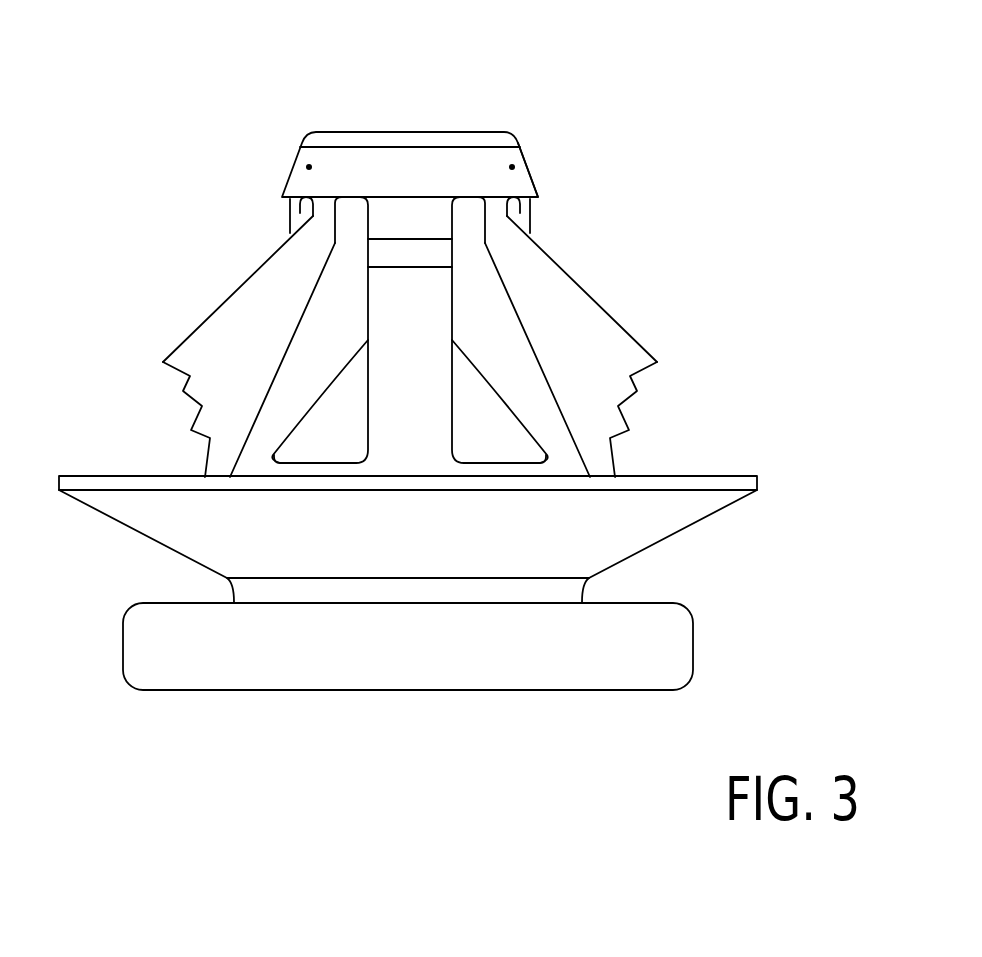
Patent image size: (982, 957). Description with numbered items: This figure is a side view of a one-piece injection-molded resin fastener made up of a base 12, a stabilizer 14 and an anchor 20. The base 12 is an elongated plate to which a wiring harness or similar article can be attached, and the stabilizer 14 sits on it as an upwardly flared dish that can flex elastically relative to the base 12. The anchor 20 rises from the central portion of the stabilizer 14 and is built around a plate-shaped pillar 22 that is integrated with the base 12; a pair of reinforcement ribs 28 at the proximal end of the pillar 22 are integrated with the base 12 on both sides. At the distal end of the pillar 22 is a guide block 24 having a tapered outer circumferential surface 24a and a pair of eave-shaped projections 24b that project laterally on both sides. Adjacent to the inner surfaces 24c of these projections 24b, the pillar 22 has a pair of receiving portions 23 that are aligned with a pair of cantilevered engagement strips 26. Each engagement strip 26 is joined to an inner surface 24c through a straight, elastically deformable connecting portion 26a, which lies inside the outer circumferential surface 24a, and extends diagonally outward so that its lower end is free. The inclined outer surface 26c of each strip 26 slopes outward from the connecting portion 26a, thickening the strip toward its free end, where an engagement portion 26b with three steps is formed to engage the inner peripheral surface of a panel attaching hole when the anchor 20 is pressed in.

The base 12 is at (315, 667).
The stabilizer 14 is at (667, 513).
The anchor 20 is at (262, 135).
The pillar 22 is at (420, 312).
The receiving portions 23 is at (357, 220).
The guide block 24 is at (432, 132).
The tapered outer circumferential surface 24a is at (533, 160).
The eave-shaped projections 24b is at (310, 165).
The inner surfaces of the projections 24c is at (290, 213).
The engagement strips 26 is at (258, 300).
The connecting portions 26a is at (307, 228).
The engagement portion 26b is at (190, 400).
The inclined outer surfaces 26c is at (242, 271).
The reinforcement ribs 28 is at (320, 433).